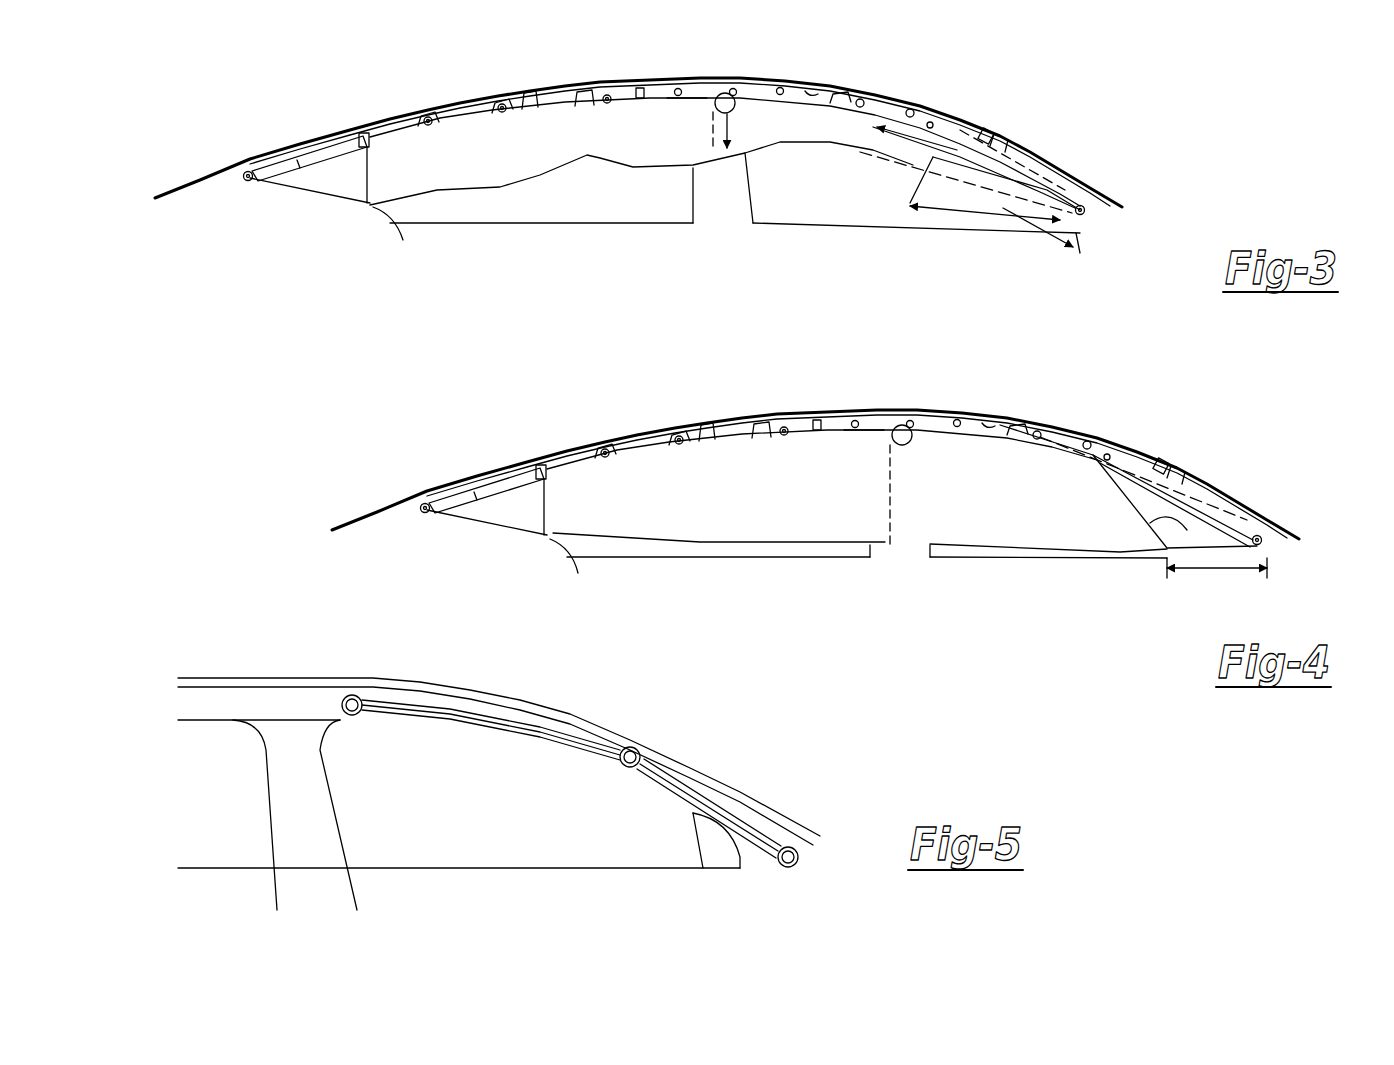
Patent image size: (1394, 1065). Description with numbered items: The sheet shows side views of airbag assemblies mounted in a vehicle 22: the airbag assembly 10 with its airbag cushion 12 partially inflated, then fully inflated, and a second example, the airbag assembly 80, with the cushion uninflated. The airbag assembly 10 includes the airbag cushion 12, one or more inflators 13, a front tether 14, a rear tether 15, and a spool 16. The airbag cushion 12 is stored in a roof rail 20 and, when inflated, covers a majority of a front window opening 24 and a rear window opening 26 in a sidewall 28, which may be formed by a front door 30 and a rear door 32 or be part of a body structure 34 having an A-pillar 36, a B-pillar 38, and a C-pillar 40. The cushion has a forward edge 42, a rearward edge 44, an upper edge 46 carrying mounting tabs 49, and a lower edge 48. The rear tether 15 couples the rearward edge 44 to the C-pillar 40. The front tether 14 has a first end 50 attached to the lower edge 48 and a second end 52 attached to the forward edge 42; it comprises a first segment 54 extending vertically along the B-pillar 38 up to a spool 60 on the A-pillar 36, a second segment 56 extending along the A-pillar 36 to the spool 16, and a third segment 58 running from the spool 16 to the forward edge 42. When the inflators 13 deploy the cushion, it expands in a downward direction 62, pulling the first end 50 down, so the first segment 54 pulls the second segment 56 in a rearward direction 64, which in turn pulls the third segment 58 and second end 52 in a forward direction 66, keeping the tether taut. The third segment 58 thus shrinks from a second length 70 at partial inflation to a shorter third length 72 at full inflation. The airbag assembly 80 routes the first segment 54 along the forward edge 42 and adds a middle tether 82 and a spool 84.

In FIG. 3, the airbag assembly 10 is at (1100, 220).
In FIG. 4, the airbag assembly 10 is at (1275, 548).
In FIG. 3, the airbag cushion 12 is at (640, 88).
In FIG. 4, the airbag cushion 12 is at (810, 420).
In FIG. 5, the airbag cushion 12 is at (448, 722).
In FIG. 3, the inflator 13 is at (362, 133).
In FIG. 4, the inflator 13 is at (540, 466).
In FIG. 3, the front tether 14 is at (975, 118).
In FIG. 4, the front tether 14 is at (1145, 450).
In FIG. 5, the front tether 14 is at (755, 815).
In FIG. 3, the rear tether 15 is at (305, 200).
In FIG. 4, the rear tether 15 is at (490, 532).
In FIG. 3, the spool 16 is at (1093, 210).
In FIG. 4, the spool 16 is at (1270, 540).
In FIG. 5, the spool 16 is at (803, 853).
In FIG. 3, the roof rail 20 is at (810, 90).
In FIG. 4, the roof rail 20 is at (987, 422).
In FIG. 3, the vehicle 22 is at (1085, 125).
In FIG. 4, the vehicle 22 is at (1260, 447).
In FIG. 5, the vehicle 22 is at (738, 722).
In FIG. 3, the front window opening 24 is at (885, 222).
In FIG. 4, the front window opening 24 is at (955, 557).
In FIG. 5, the front window opening 24 is at (505, 868).
In FIG. 3, the rear window opening 26 is at (620, 222).
In FIG. 4, the rear window opening 26 is at (770, 557).
In FIG. 5, the rear window opening 26 is at (235, 868).
In FIG. 3, the sidewall 28 is at (706, 202).
In FIG. 4, the sidewall 28 is at (881, 574).
In FIG. 5, the sidewall 28 is at (293, 904).
In FIG. 3, the front door 30 is at (807, 237).
In FIG. 4, the front door 30 is at (1035, 565).
In FIG. 3, the rear door 32 is at (522, 240).
In FIG. 4, the rear door 32 is at (650, 550).
In FIG. 3, the body structure 34 is at (890, 82).
In FIG. 4, the body structure 34 is at (1065, 415).
In FIG. 5, the body structure 34 is at (620, 738).
In FIG. 3, the A-pillar 36 is at (922, 112).
In FIG. 4, the A-pillar 36 is at (1088, 437).
In FIG. 5, the A-pillar 36 is at (700, 780).
In FIG. 3, the B-pillar 38 is at (723, 217).
In FIG. 4, the B-pillar 38 is at (912, 548).
In FIG. 5, the B-pillar 38 is at (325, 835).
In FIG. 3, the C-pillar 40 is at (541, 102).
In FIG. 4, the C-pillar 40 is at (718, 434).
In FIG. 3, the forward edge 42 is at (936, 165).
In FIG. 4, the forward edge 42 is at (1240, 530).
In FIG. 3, the rearward edge 44 is at (372, 170).
In FIG. 4, the rearward edge 44 is at (557, 504).
In FIG. 3, the upper edge 46 is at (560, 98).
In FIG. 4, the upper edge 46 is at (737, 430).
In FIG. 3, the lower edge 48 is at (780, 142).
In FIG. 4, the lower edge 48 is at (832, 557).
In FIG. 3, the mounting tab 49 is at (500, 104).
In FIG. 4, the mounting tab 49 is at (677, 436).
In FIG. 3, the first end 50 is at (693, 165).
In FIG. 4, the first end 50 is at (885, 542).
In FIG. 3, the second end 52 is at (907, 170).
In FIG. 4, the second end 52 is at (1217, 558).
In FIG. 3, the first segment 54 is at (700, 112).
In FIG. 4, the first segment 54 is at (882, 445).
In FIG. 3, the second segment 56 is at (988, 130).
In FIG. 4, the second segment 56 is at (1160, 462).
In FIG. 3, the third segment 58 is at (1068, 182).
In FIG. 4, the third segment 58 is at (1165, 531).
In FIG. 3, the spool 60 is at (735, 98).
In FIG. 4, the spool 60 is at (912, 430).
In FIG. 3, the downward direction 62 is at (735, 120).
In FIG. 3, the rearward direction 64 is at (913, 137).
In FIG. 3, the forward direction 66 is at (1028, 222).
In FIG. 3, the second length 70 is at (995, 222).
In FIG. 4, the third length 72 is at (1205, 574).
In FIG. 5, the airbag assembly 80 is at (762, 866).
In FIG. 5, the middle tether 82 is at (518, 722).
In FIG. 5, the spool 84 is at (340, 700).